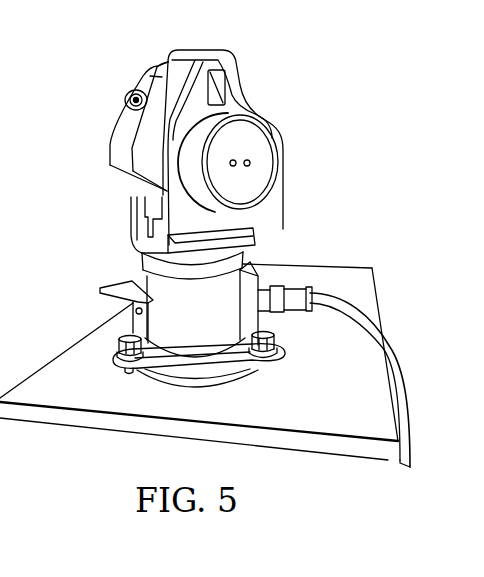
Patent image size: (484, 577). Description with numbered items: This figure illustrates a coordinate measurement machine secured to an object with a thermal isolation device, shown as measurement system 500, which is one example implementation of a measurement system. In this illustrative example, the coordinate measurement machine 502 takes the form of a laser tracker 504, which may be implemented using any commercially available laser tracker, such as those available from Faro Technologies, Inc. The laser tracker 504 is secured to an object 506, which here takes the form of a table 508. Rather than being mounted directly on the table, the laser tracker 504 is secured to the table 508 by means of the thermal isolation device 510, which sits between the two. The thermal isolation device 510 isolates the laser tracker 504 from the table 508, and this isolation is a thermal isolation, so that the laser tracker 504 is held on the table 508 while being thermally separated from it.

The measurement system 500 is at (277, 78).
The coordinate measurement machine 502 is at (299, 187).
The laser tracker 504 is at (114, 144).
The object 506 is at (342, 256).
The table 508 is at (63, 368).
The thermal isolation device 510 is at (243, 383).